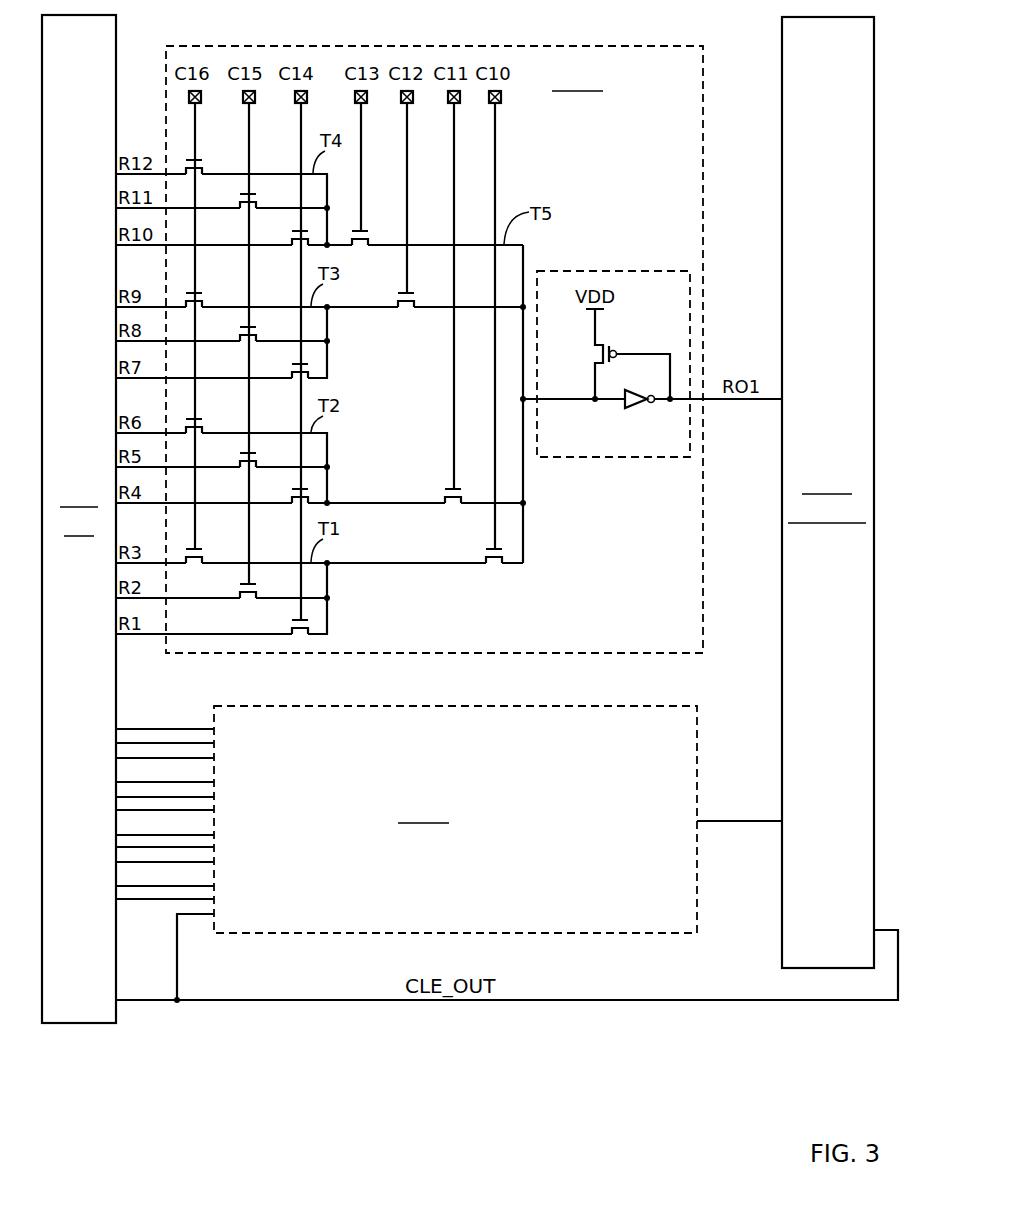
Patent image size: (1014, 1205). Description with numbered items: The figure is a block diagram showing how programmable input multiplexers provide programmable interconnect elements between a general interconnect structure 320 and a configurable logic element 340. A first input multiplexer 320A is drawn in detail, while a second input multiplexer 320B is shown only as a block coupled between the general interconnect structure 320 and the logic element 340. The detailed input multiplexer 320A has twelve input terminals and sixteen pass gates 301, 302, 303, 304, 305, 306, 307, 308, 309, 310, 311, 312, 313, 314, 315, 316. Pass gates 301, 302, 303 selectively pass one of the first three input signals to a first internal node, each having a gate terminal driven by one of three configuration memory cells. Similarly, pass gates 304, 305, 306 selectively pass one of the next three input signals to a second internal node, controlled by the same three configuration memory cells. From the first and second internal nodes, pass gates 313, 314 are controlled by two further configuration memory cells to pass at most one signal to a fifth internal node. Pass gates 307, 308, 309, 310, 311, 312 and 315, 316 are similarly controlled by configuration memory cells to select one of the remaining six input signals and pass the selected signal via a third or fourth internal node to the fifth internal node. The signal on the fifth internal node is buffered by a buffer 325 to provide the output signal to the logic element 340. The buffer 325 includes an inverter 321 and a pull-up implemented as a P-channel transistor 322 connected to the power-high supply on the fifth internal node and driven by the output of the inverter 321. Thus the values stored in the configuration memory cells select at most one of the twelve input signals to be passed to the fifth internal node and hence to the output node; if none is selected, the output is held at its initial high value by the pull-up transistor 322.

The pass gate 301 is at (293, 630).
The pass gate 302 is at (275, 585).
The pass gate 303 is at (220, 548).
The pass gate 304 is at (293, 499).
The pass gate 305 is at (275, 455).
The pass gate 306 is at (220, 418).
The pass gate 307 is at (293, 374).
The pass gate 308 is at (275, 328).
The pass gate 309 is at (220, 292).
The pass gate 310 is at (293, 241).
The pass gate 311 is at (275, 195).
The pass gate 312 is at (220, 158).
The pass gate 313 is at (486, 561).
The pass gate 314 is at (445, 500).
The pass gate 315 is at (430, 288).
The pass gate 316 is at (385, 226).
The general interconnect structure 320 is at (61, 564).
The input multiplexer 320A is at (667, 91).
The input multiplexer 320B is at (516, 823).
The inverter 321 is at (626, 403).
The P-channel transistor 322 is at (591, 352).
The buffer 325 is at (615, 270).
The configurable logic element 340 is at (809, 551).